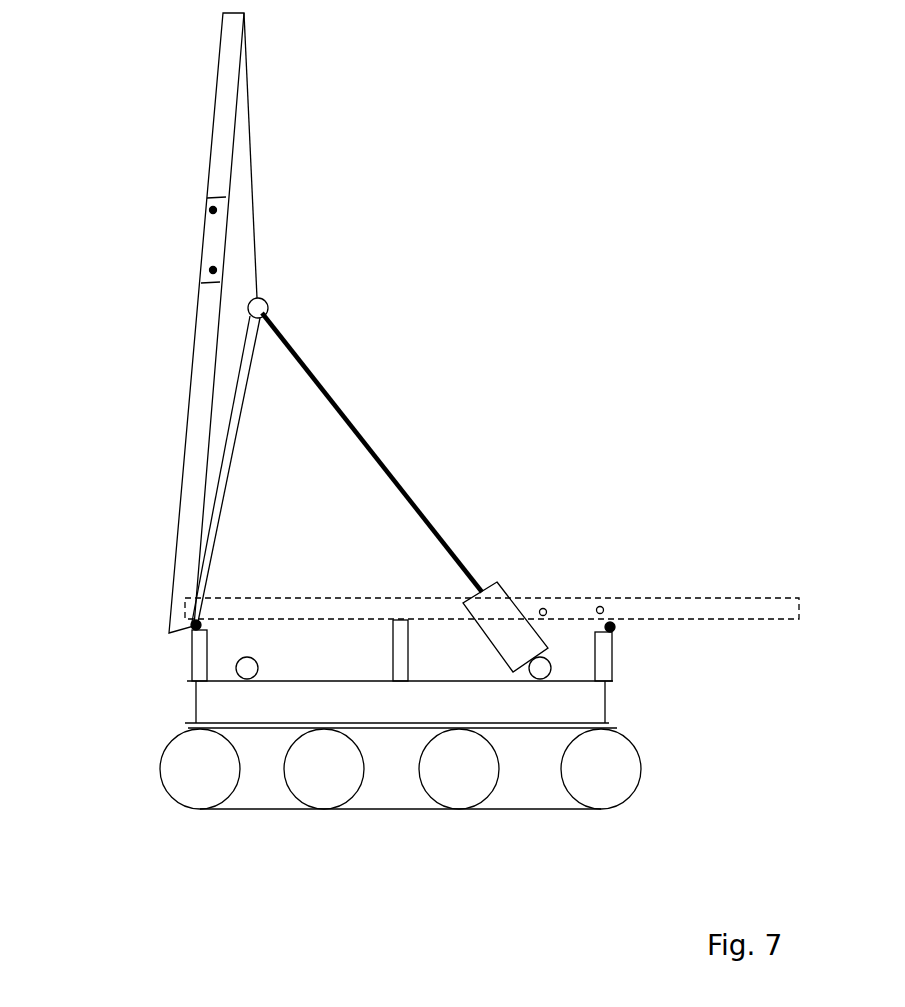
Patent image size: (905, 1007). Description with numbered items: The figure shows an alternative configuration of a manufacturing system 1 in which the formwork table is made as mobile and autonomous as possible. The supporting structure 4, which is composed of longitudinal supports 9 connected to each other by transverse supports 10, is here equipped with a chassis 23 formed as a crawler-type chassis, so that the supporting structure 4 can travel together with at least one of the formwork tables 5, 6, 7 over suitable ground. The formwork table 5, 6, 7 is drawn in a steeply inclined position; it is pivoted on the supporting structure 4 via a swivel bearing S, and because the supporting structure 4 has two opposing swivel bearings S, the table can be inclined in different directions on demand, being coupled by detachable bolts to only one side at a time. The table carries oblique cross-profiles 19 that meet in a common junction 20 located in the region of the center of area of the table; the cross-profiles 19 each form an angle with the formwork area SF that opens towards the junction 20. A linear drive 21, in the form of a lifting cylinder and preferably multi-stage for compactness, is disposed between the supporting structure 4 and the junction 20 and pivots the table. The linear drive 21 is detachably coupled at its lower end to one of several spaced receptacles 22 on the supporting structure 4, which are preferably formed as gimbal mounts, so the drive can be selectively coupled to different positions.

The manufacturing system 1 is at (492, 280).
The supporting structure 4 is at (360, 673).
The formwork table 5 is at (163, 194).
The formwork table 6 is at (163, 194).
The formwork table 7 is at (207, 202).
The longitudinal support 9 is at (607, 703).
The transverse support 10 is at (335, 697).
The cross-profile 19 is at (250, 188).
The junction 20 is at (281, 301).
The linear drive 21 is at (443, 502).
The receptacle 22 is at (247, 668).
The chassis 23 is at (423, 819).
The swivel bearing S is at (192, 632).
The formwork area SF is at (190, 320).